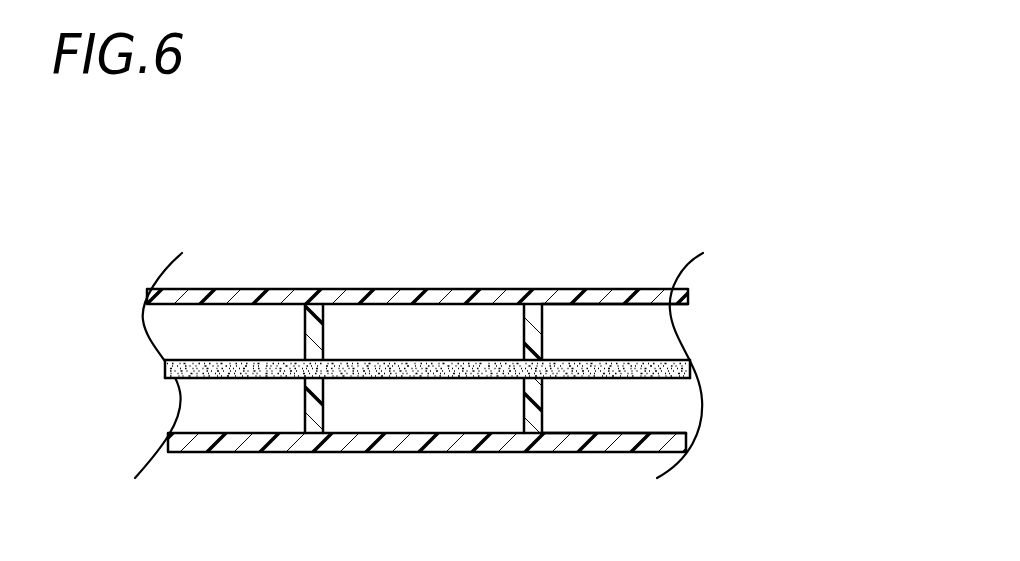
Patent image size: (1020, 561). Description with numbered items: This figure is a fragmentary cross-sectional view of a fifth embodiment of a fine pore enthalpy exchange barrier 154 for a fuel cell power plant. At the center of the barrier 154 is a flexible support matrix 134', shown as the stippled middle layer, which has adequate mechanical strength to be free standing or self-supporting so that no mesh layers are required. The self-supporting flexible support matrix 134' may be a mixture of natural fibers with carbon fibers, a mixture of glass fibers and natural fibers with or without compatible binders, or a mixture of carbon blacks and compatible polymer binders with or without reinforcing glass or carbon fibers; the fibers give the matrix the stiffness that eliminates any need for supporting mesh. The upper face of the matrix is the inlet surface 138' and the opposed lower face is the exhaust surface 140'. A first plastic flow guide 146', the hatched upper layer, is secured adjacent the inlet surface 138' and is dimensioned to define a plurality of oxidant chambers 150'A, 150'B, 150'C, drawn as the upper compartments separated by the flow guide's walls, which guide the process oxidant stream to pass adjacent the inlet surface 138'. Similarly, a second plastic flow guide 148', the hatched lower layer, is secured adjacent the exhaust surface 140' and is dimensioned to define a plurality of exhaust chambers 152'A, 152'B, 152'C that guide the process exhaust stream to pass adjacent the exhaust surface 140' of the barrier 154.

The fine pore enthalpy exchange barrier 154 is at (738, 255).
The first plastic flow guide 146' is at (406, 259).
The second plastic flow guide 148' is at (415, 475).
The flexible support matrix 134' is at (376, 383).
The inlet surface 138' is at (467, 321).
The exhaust surface 140' is at (477, 418).
The oxidant chamber 150'A is at (284, 322).
The oxidant chamber 150'B is at (456, 325).
The oxidant chamber 150'C is at (621, 271).
The exhaust chamber 152'A is at (224, 453).
The exhaust chamber 152'B is at (411, 453).
The exhaust chamber 152'C is at (621, 466).